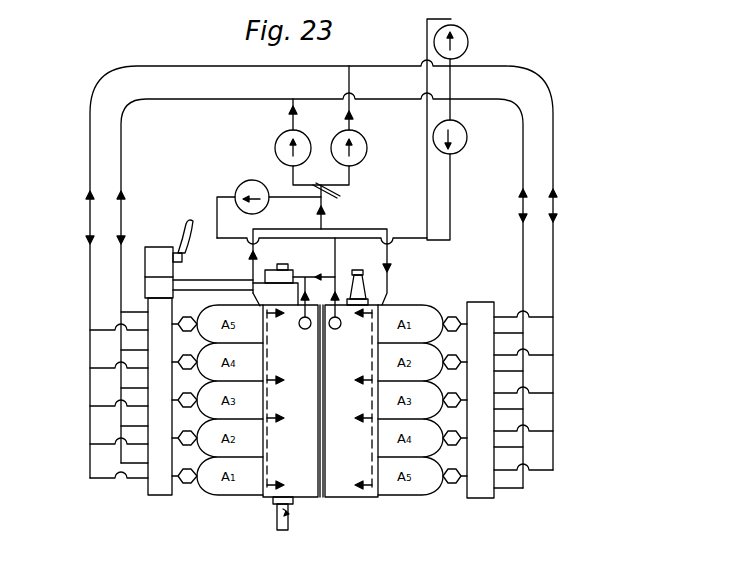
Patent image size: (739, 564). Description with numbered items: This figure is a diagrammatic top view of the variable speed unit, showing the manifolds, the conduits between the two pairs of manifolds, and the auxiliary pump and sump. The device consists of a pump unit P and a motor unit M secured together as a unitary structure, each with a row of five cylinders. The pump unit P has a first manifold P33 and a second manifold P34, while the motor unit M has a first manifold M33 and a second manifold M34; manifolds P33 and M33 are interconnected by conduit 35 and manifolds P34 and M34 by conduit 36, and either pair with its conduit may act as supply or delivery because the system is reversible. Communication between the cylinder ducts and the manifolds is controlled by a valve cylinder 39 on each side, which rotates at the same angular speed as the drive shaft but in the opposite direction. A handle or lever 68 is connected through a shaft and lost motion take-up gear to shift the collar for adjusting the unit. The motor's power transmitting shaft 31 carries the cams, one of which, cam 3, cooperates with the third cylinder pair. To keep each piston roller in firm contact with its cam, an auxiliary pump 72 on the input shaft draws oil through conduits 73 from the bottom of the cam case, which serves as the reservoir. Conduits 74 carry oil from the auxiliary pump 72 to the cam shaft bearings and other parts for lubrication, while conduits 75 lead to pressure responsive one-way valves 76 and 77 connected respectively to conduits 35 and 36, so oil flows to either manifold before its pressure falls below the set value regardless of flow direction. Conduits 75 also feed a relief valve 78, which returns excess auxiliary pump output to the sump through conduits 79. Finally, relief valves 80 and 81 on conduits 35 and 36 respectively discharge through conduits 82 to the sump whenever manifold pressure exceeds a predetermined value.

The conduit 36 is at (208, 65).
The conduit 35 is at (216, 102).
The valve cylinder 39 is at (159, 498).
The handle or lever 68 is at (184, 223).
The auxiliary pump 72 is at (271, 268).
The conduits 73 is at (333, 289).
The conduits 74 is at (306, 229).
The conduits 75 is at (335, 206).
The pressure responsive one-way valve 76 is at (283, 137).
The pressure responsive one-way valve 77 is at (367, 140).
The relief valve 78 is at (249, 181).
The conduits 79 is at (216, 200).
The relief valve 80 is at (468, 139).
The relief valve 81 is at (468, 46).
The conduits 82 is at (434, 203).
The power transmitting shaft 31 is at (364, 293).
The cam 3 is at (291, 514).
The first manifold of pump unit P33 is at (118, 377).
The second manifold of pump unit P34 is at (88, 459).
The first manifold of motor unit M33 is at (527, 331).
The second manifold of motor unit M34 is at (553, 384).
The pump unit P is at (248, 501).
The motor unit M is at (359, 508).